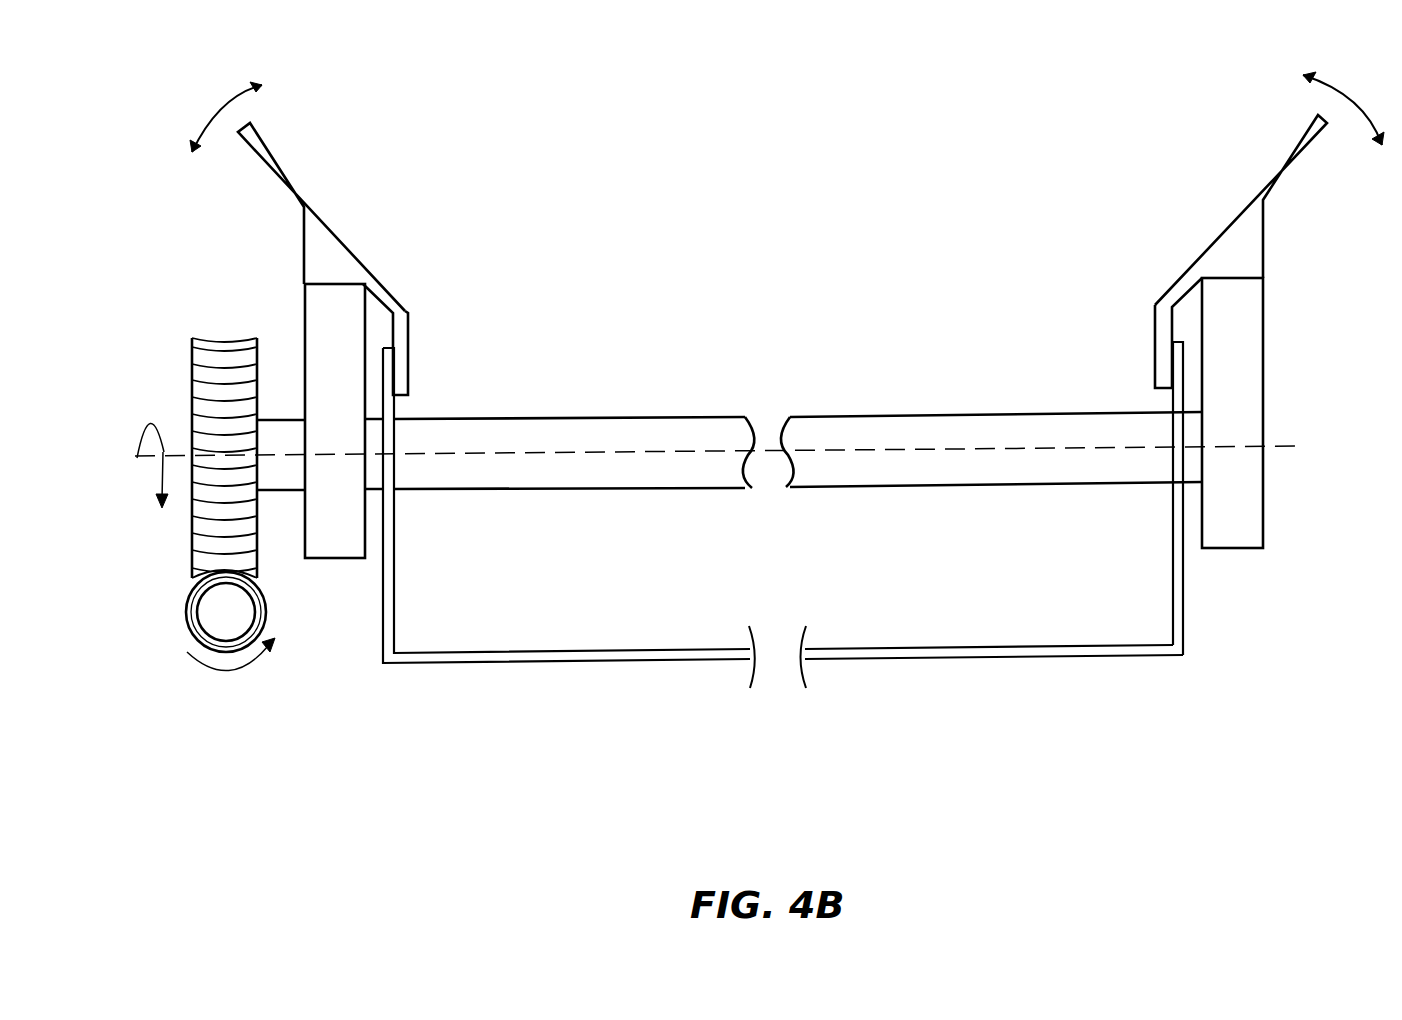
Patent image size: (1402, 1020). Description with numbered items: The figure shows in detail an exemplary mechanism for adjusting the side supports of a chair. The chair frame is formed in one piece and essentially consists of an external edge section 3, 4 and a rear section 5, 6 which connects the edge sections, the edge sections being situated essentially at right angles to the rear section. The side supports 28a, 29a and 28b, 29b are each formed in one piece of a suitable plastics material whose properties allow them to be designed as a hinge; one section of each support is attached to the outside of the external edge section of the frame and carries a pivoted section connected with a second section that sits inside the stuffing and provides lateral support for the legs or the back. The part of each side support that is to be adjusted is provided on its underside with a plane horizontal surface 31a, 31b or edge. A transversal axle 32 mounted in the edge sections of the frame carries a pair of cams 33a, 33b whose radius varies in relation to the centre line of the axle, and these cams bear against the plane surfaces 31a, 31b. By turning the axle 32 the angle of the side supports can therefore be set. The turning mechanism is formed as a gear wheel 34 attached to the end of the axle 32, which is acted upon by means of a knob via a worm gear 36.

The side support 28a is at (354, 238).
The side support 29a is at (354, 238).
The side support 28b is at (1217, 230).
The side support 29b is at (1217, 230).
The plane horizontal surface 31a is at (280, 403).
The plane horizontal surface 31b is at (1277, 413).
The cam 33a is at (306, 362).
The cam 33b is at (1230, 353).
The transversal axle 32 is at (895, 427).
The gear wheel 34 is at (192, 356).
The worm gear 36 is at (190, 590).
The external edge section 3 is at (1241, 509).
The external edge section 4 is at (1184, 600).
The rear section 5 is at (783, 540).
The rear section 6 is at (930, 660).